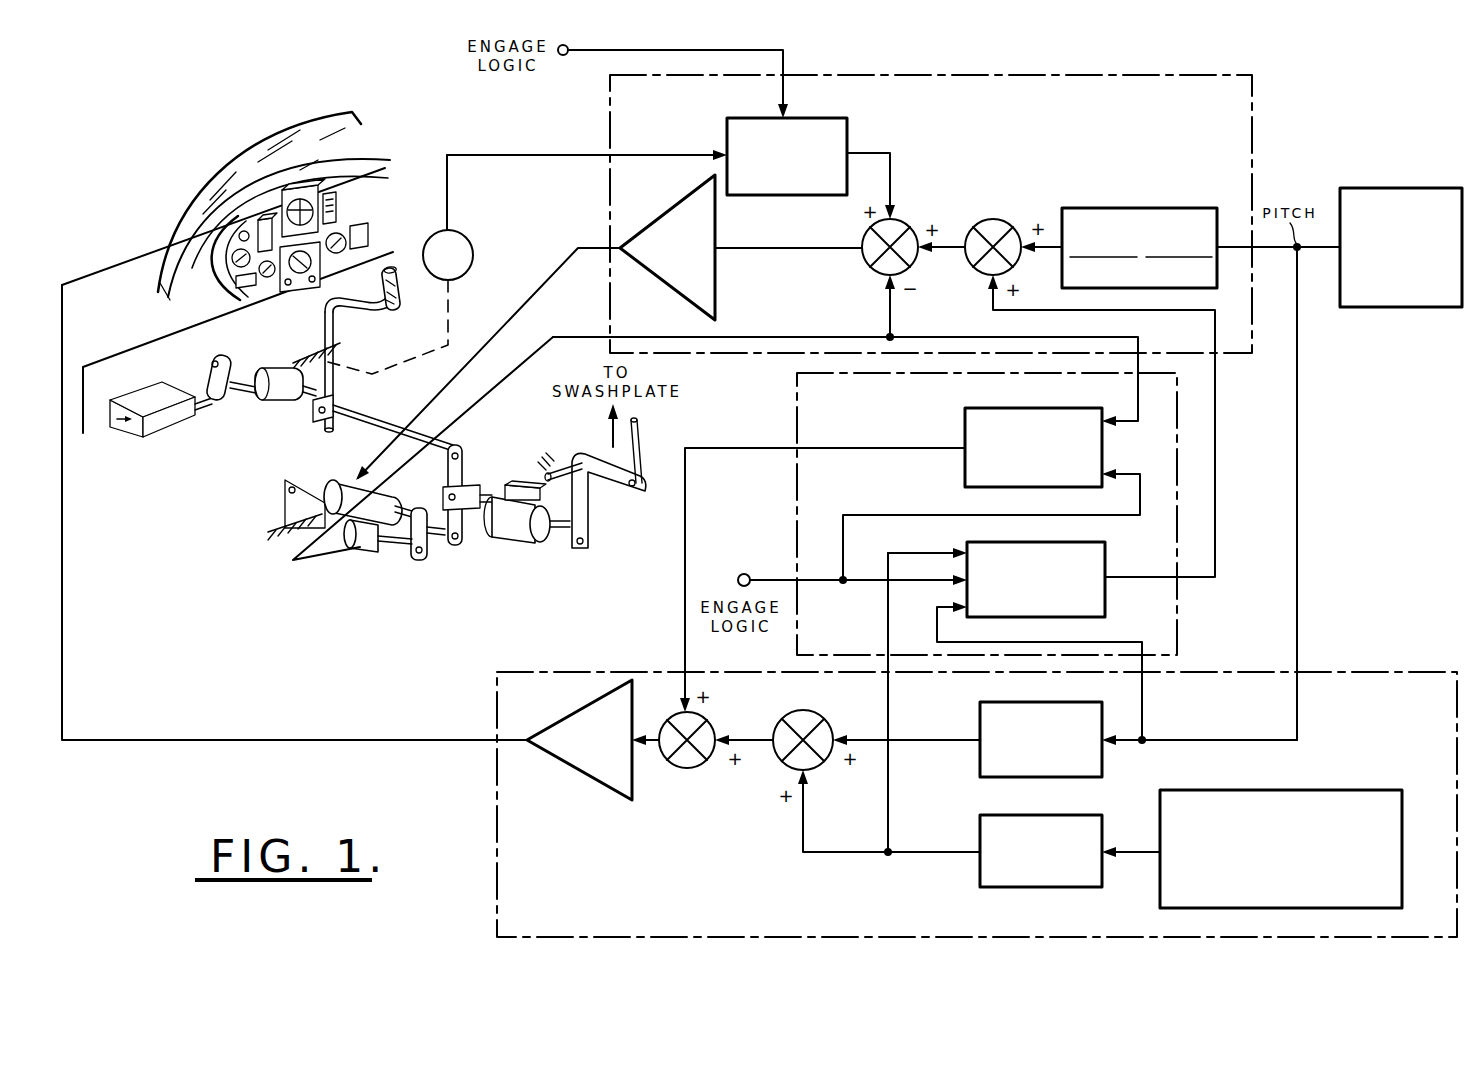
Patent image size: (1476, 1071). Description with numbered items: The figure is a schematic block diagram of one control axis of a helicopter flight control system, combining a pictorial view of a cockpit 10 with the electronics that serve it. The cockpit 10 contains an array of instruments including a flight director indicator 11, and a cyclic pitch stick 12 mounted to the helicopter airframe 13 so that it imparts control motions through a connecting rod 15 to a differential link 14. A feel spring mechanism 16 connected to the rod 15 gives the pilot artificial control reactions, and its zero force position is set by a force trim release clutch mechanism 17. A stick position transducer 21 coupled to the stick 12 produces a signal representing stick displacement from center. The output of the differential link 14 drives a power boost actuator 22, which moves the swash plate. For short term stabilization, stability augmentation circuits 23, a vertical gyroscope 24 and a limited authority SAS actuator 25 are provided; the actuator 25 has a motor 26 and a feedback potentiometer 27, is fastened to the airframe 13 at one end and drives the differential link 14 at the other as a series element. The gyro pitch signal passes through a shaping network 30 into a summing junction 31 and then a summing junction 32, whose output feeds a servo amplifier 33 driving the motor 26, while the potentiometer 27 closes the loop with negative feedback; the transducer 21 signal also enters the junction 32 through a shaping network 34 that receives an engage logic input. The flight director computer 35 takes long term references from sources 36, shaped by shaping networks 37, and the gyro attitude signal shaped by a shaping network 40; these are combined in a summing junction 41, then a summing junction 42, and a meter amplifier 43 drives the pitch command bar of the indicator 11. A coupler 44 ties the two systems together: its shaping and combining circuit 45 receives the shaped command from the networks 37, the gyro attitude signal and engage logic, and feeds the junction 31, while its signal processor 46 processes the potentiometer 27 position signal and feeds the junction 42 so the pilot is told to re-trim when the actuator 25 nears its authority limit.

The helicopter cockpit arrangement 10 is at (200, 125).
The flight director indicator 11 is at (300, 196).
The cyclic pitch stick 12 is at (398, 310).
The helicopter airframe 13 is at (308, 352).
The differential link 14 is at (465, 474).
The connecting rod 15 is at (372, 421).
The feel spring mechanism 16 is at (272, 369).
The force trim release clutch mechanism 17 is at (139, 436).
The stick position transducer 21 is at (472, 247).
The power boost actuator 22 is at (520, 541).
The stability augmentation circuits 23 is at (1254, 89).
The vertical gyroscope 24 is at (1400, 187).
The limited authority SAS actuator 25 is at (294, 564).
The motor 26 is at (350, 479).
The feedback potentiometer 27 is at (365, 551).
The shaping network 30 is at (1138, 207).
The summing junction 31 is at (998, 222).
The summing junction 32 is at (902, 222).
The servo amplifier 33 is at (674, 208).
The shaping network 34 is at (725, 119).
The flight director computer 35 is at (1362, 672).
The sources of long term flight references 36 is at (1313, 790).
The shaping networks 37 is at (980, 870).
The shaping network 40 is at (980, 757).
The summing junction 41 is at (832, 722).
The summing junction 42 is at (715, 724).
The meter amplifier 43 is at (578, 712).
The coupler 44 is at (797, 398).
The shaping and combining circuit 45 is at (1105, 560).
The signal processor 46 is at (965, 478).